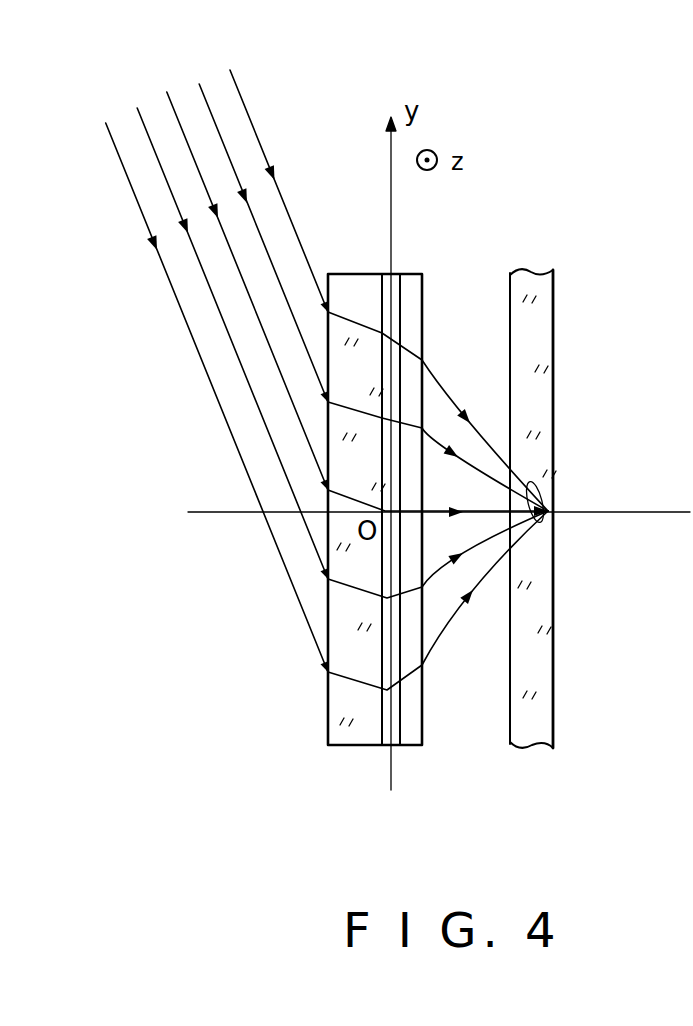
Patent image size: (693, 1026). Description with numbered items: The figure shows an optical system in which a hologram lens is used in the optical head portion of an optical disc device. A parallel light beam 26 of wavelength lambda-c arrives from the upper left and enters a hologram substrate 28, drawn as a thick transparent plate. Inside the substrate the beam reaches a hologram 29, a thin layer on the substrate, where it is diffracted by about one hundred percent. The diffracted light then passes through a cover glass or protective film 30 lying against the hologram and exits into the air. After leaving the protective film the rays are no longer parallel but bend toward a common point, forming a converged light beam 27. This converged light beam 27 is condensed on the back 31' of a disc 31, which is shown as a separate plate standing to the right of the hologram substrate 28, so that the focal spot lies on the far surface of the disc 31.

The parallel light beam 26 is at (262, 112).
The converged light beam 27 is at (548, 520).
The hologram substrate 28 is at (355, 283).
The hologram 29 is at (395, 283).
The cover glass or protective film 30 is at (415, 296).
The disc 31 is at (558, 477).
The back of disc 31' is at (604, 509).